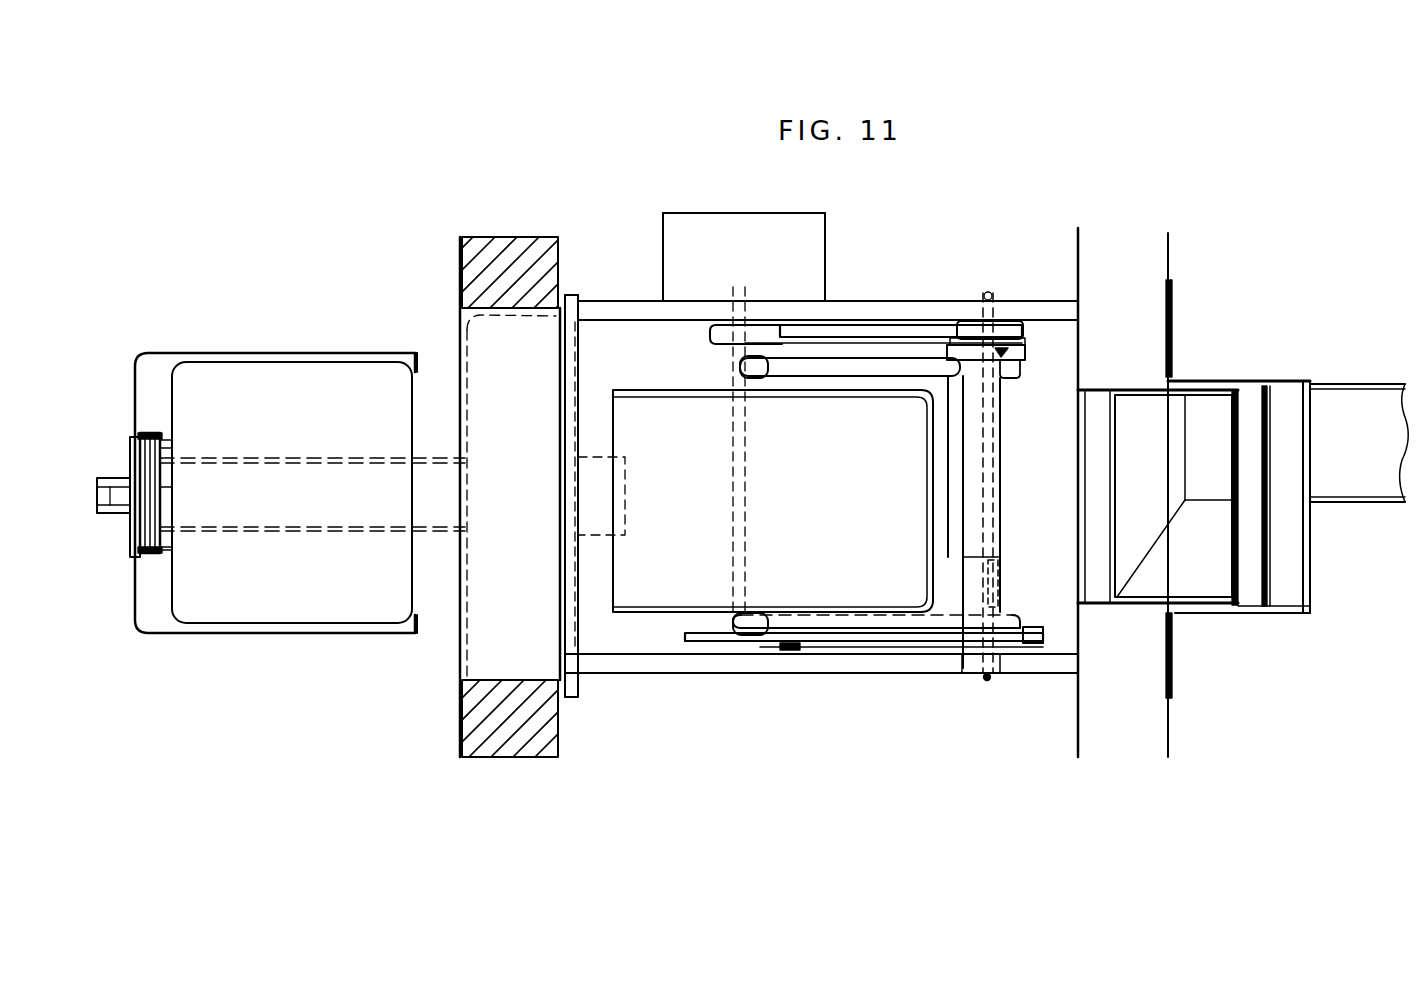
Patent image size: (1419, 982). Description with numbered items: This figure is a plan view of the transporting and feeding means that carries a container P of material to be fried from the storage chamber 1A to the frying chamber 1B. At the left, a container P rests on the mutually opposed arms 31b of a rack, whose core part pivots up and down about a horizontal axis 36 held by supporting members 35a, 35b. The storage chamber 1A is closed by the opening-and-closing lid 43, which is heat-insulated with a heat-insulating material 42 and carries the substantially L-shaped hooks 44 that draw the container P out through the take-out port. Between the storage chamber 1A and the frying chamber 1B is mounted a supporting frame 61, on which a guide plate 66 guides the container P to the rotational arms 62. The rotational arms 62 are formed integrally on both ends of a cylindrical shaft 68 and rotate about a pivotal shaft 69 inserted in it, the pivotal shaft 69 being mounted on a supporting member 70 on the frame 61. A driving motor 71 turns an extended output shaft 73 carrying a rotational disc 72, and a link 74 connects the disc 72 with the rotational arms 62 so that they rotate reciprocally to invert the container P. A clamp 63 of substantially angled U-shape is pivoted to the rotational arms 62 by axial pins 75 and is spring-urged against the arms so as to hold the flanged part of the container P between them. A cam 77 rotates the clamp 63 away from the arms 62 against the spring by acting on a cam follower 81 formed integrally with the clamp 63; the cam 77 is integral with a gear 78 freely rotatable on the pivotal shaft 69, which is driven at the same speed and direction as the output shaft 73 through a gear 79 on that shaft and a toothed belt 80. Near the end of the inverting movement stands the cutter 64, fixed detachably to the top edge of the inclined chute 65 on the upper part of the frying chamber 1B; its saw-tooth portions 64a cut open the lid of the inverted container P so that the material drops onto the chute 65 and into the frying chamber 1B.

The storage chamber 1A is at (452, 272).
The frying chamber 1B is at (1170, 260).
The container P is at (283, 383).
The arms of the rack 31b is at (412, 353).
The supporting member 35a is at (170, 492).
The supporting member 35b is at (135, 445).
The horizontal axis 36 is at (170, 447).
The heat-insulating material 42 is at (462, 355).
The opening-and-closing lid 43 is at (567, 335).
The hook 44 is at (310, 458).
The supporting frame 61 is at (872, 660).
The rotational arms 62 is at (747, 368).
The clamp 63 is at (847, 365).
The cutter 64 is at (1283, 403).
The saw-tooth portions 64a is at (1238, 522).
The inclined chute 65 is at (1358, 384).
The guide plate 66 is at (655, 598).
The cylindrical shaft 68 is at (995, 590).
The pivotal shaft 69 is at (985, 300).
The supporting member 70 is at (1003, 325).
The driving motor 71 is at (812, 243).
The rotational disc 72 is at (710, 636).
The extended output shaft 73 is at (746, 425).
The link 74 is at (930, 648).
The axial pins 75 is at (1025, 352).
The cam 77 is at (1018, 370).
The gear 78 is at (1015, 340).
The gear 79 is at (708, 327).
The toothed belt 80 is at (930, 335).
The cam follower 81 is at (933, 385).